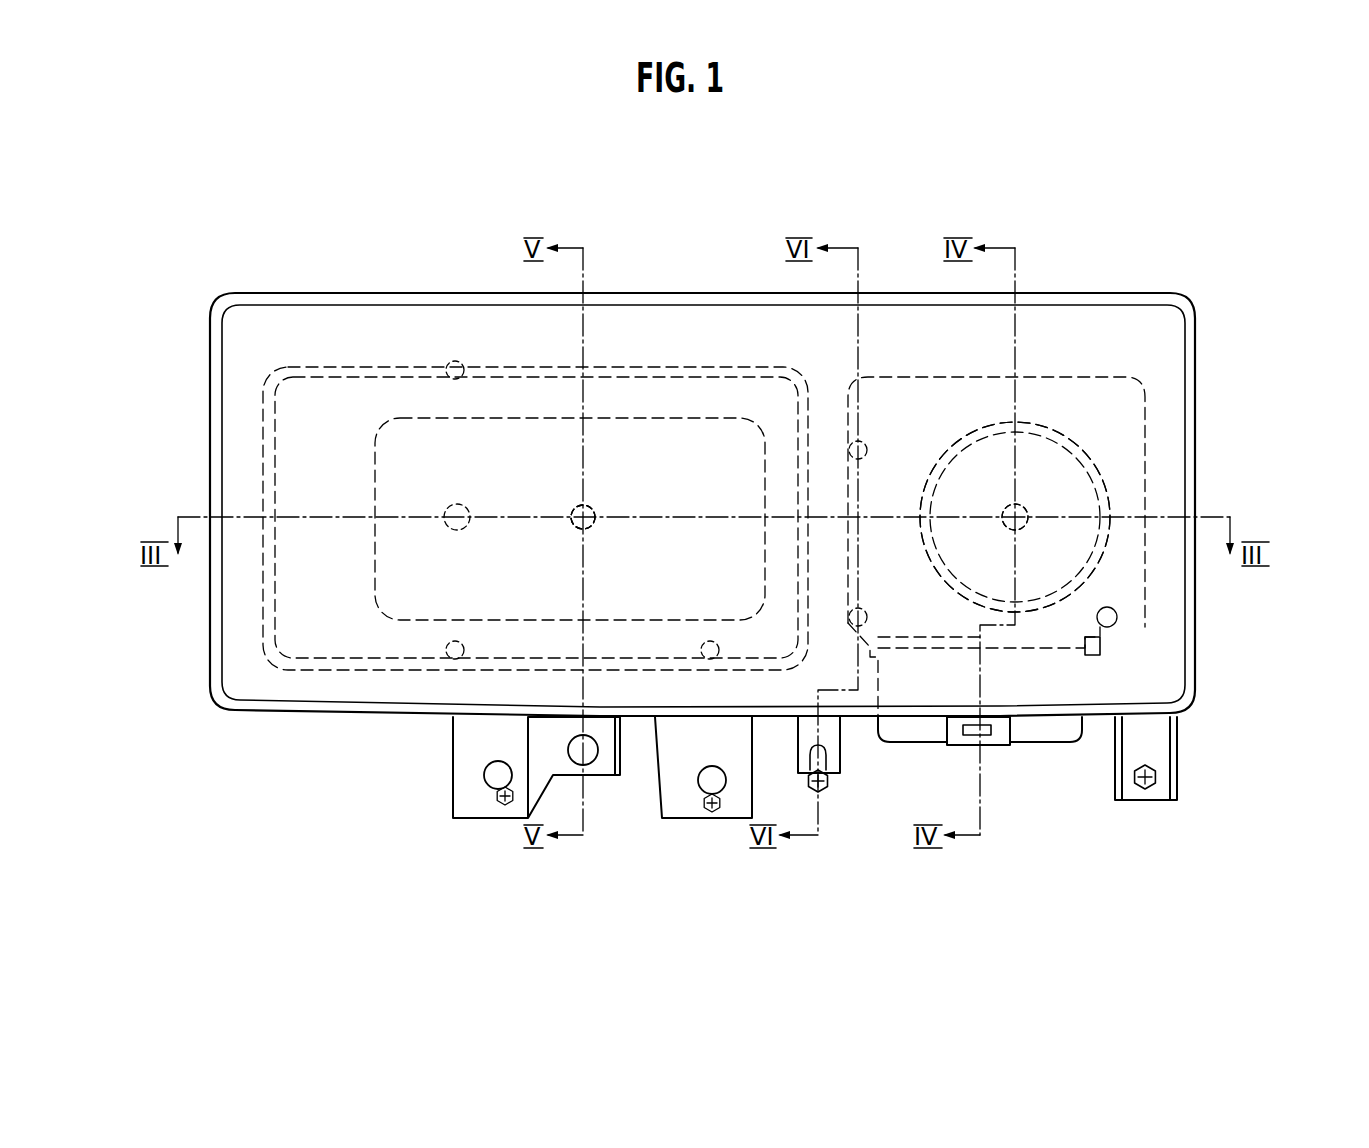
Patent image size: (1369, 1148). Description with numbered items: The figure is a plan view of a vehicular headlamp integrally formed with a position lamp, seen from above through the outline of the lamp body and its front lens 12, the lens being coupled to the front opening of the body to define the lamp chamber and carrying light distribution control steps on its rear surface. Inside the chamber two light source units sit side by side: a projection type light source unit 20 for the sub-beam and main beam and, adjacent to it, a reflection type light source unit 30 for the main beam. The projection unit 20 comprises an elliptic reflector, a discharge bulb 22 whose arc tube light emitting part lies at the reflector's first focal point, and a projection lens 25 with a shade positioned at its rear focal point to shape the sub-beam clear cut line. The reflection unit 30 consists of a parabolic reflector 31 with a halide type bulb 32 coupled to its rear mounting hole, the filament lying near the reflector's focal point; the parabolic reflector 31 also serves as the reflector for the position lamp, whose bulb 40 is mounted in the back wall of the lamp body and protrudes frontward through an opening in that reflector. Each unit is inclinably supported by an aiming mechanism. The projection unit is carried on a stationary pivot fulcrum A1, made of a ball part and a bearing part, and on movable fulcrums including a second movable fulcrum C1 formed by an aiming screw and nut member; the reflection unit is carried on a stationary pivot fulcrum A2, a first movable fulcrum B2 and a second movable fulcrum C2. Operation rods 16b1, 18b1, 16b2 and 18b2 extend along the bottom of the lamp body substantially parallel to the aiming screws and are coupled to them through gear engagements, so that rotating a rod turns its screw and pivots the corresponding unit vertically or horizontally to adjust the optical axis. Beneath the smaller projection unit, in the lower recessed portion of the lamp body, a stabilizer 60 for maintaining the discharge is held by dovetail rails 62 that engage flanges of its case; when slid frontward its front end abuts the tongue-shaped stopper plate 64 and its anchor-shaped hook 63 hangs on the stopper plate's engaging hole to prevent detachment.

The front lens 12 is at (707, 330).
The light source unit of projection type 20 is at (1262, 366).
The discharge bulb 22 is at (1030, 512).
The projection lens 25 is at (1068, 485).
The light source unit of reflection type 30 is at (672, 197).
The parabolic reflector 31 is at (586, 505).
The halide type bulb 32 is at (592, 503).
The bulb for position lamp 40 is at (440, 510).
The stabilizer 60 is at (1066, 752).
The rails 62 is at (1100, 656).
The hook 63 is at (1012, 746).
The stopper plate 64 is at (922, 734).
The operation rod 16b1 is at (822, 794).
The operation rod 16b2 is at (502, 808).
The operation rod 18b1 is at (1146, 792).
The operation rod 18b2 is at (708, 814).
The stationary pivot fulcrum A1 is at (866, 440).
The stationary pivot fulcrum A2 is at (373, 304).
The first movable fulcrum B2 is at (450, 662).
The second movable fulcrum C1 is at (1122, 627).
The second movable fulcrum C2 is at (706, 664).